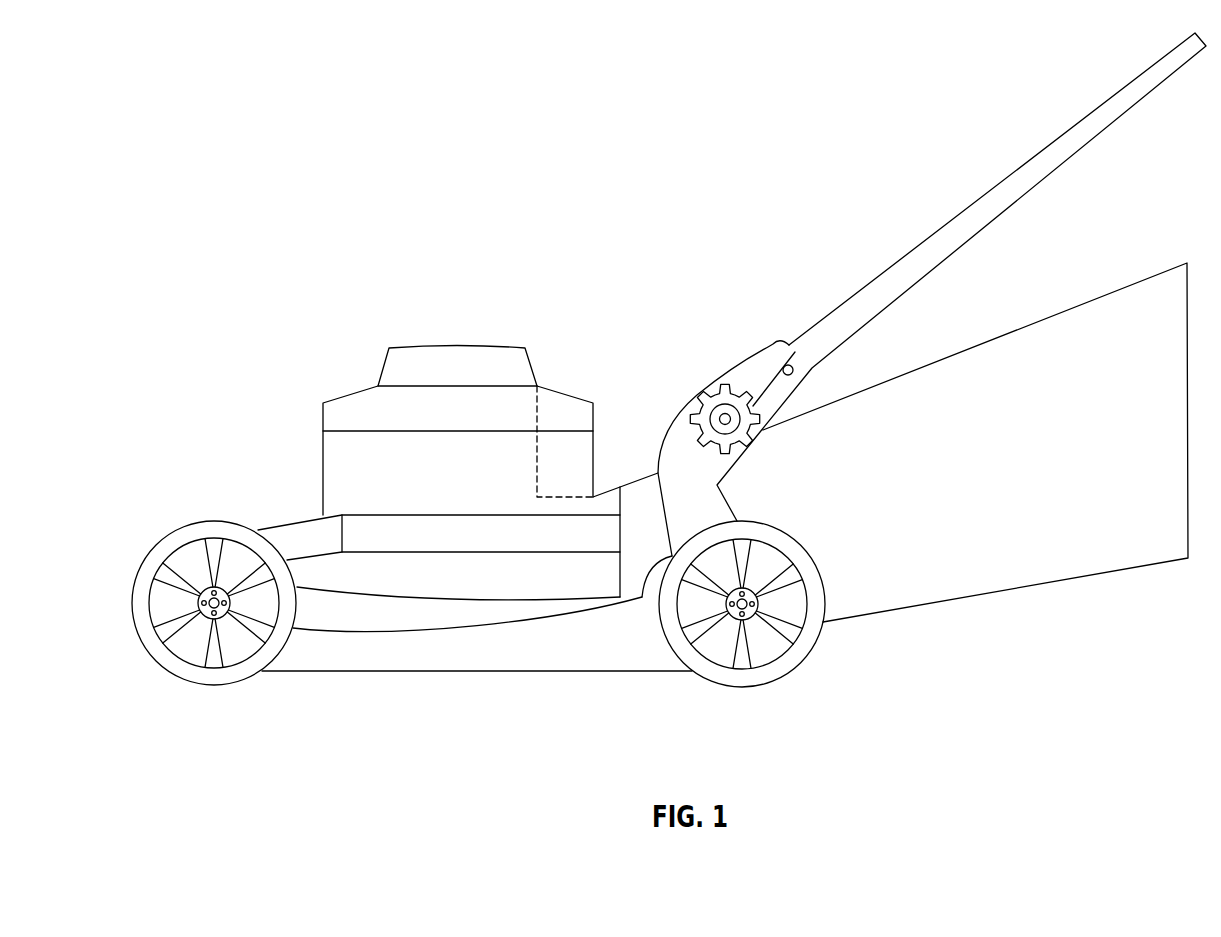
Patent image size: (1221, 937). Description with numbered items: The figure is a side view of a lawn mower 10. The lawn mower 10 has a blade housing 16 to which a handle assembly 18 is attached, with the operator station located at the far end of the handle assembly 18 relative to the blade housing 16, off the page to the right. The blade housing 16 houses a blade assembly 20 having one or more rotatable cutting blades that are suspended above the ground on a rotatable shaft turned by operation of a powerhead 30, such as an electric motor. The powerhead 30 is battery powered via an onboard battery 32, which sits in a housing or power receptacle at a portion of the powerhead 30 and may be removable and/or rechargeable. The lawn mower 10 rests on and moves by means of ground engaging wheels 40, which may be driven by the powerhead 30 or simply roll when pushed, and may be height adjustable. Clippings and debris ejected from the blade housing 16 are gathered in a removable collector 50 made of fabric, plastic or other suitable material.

The lawn mower 10 is at (216, 176).
The blade housing 16 is at (412, 660).
The handle assembly 18 is at (1002, 184).
The blade assembly 20 is at (517, 694).
The powerhead 30 is at (508, 393).
The onboard battery 32 is at (561, 402).
The ground engaging wheels 40 is at (213, 687).
The collector 50 is at (984, 573).